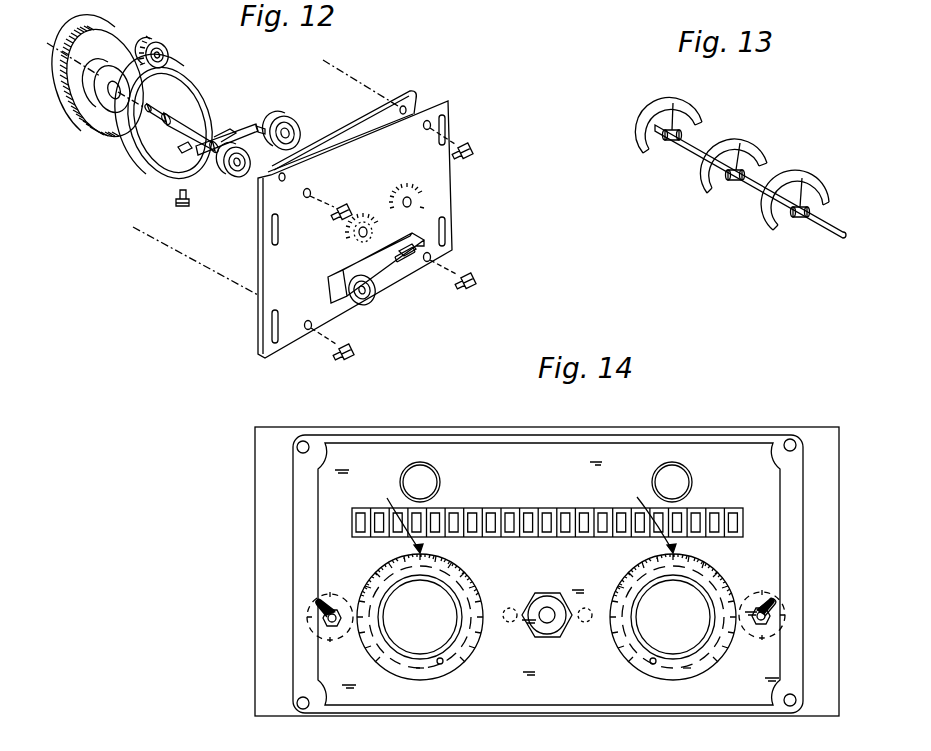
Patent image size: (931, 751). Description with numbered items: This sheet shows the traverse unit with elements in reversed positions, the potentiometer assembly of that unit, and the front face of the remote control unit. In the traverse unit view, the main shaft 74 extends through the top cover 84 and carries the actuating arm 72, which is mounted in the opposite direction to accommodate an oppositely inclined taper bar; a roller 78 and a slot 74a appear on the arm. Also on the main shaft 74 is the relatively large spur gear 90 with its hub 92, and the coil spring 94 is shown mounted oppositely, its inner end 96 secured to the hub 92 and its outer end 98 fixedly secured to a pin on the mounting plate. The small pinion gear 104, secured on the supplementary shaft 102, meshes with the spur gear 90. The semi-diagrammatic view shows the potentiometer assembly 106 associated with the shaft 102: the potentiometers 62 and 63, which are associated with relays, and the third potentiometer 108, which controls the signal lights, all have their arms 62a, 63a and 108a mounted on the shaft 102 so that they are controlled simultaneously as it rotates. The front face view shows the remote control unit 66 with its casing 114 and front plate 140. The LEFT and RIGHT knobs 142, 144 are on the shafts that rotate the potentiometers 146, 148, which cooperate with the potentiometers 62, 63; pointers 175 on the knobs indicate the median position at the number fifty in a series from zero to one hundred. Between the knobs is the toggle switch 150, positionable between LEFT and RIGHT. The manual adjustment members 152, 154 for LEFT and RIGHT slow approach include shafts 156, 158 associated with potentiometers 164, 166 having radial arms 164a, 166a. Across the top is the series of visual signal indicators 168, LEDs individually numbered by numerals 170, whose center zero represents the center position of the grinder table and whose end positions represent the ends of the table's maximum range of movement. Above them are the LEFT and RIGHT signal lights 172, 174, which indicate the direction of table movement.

In FIG. 12, the spur gear 90 is at (70, 82).
In FIG. 12, the hub 92 is at (98, 101).
In FIG. 12, the pinion gear 104 is at (166, 45).
In FIG. 12, the coil spring 94 is at (208, 80).
In FIG. 12, the main shaft 74 is at (203, 137).
In FIG. 12, the outer end 98 is at (250, 127).
In FIG. 12, the inner end 96 is at (178, 147).
In FIG. 12, the top cover 84 is at (455, 118).
In FIG. 12, the actuating arm 72 is at (330, 270).
In FIG. 12, the roller 78 is at (360, 303).
In FIG. 12, the slot 74a is at (410, 262).
In FIG. 13, the potentiometer assembly 106 is at (723, 162).
In FIG. 13, the supplementary shaft 102 is at (827, 231).
In FIG. 13, the potentiometer 62 is at (694, 112).
In FIG. 13, the arm 62a is at (668, 118).
In FIG. 13, the potentiometer 63 is at (758, 155).
In FIG. 13, the arm 63a is at (705, 157).
In FIG. 13, the third potentiometer 108 is at (824, 190).
In FIG. 13, the arm 108a is at (775, 195).
In FIG. 14, the remote control unit 66 is at (540, 551).
In FIG. 14, the casing 114 is at (827, 482).
In FIG. 14, the front plate 140 is at (783, 540).
In FIG. 14, the LEFT signal light 172 is at (428, 476).
In FIG. 14, the RIGHT signal light 174 is at (684, 477).
In FIG. 14, the visual signal indicators 168 is at (547, 509).
In FIG. 14, the numerals 170 is at (483, 544).
In FIG. 14, the pointers 175 is at (392, 518).
In FIG. 14, the LEFT knob 142 is at (420, 592).
In FIG. 14, the potentiometer 146 is at (418, 683).
In FIG. 14, the RIGHT knob 144 is at (686, 666).
In FIG. 14, the potentiometer 148 is at (615, 642).
In FIG. 14, the toggle switch 150 is at (556, 589).
In FIG. 14, the manual adjustment member 152 is at (282, 610).
In FIG. 14, the potentiometer 164 is at (312, 594).
In FIG. 14, the radial arm 164a is at (336, 606).
In FIG. 14, the shaft 156 is at (337, 637).
In FIG. 14, the manual adjustment member 154 is at (805, 607).
In FIG. 14, the potentiometer 166 is at (782, 592).
In FIG. 14, the radial arm 166a is at (765, 602).
In FIG. 14, the shaft 158 is at (776, 620).